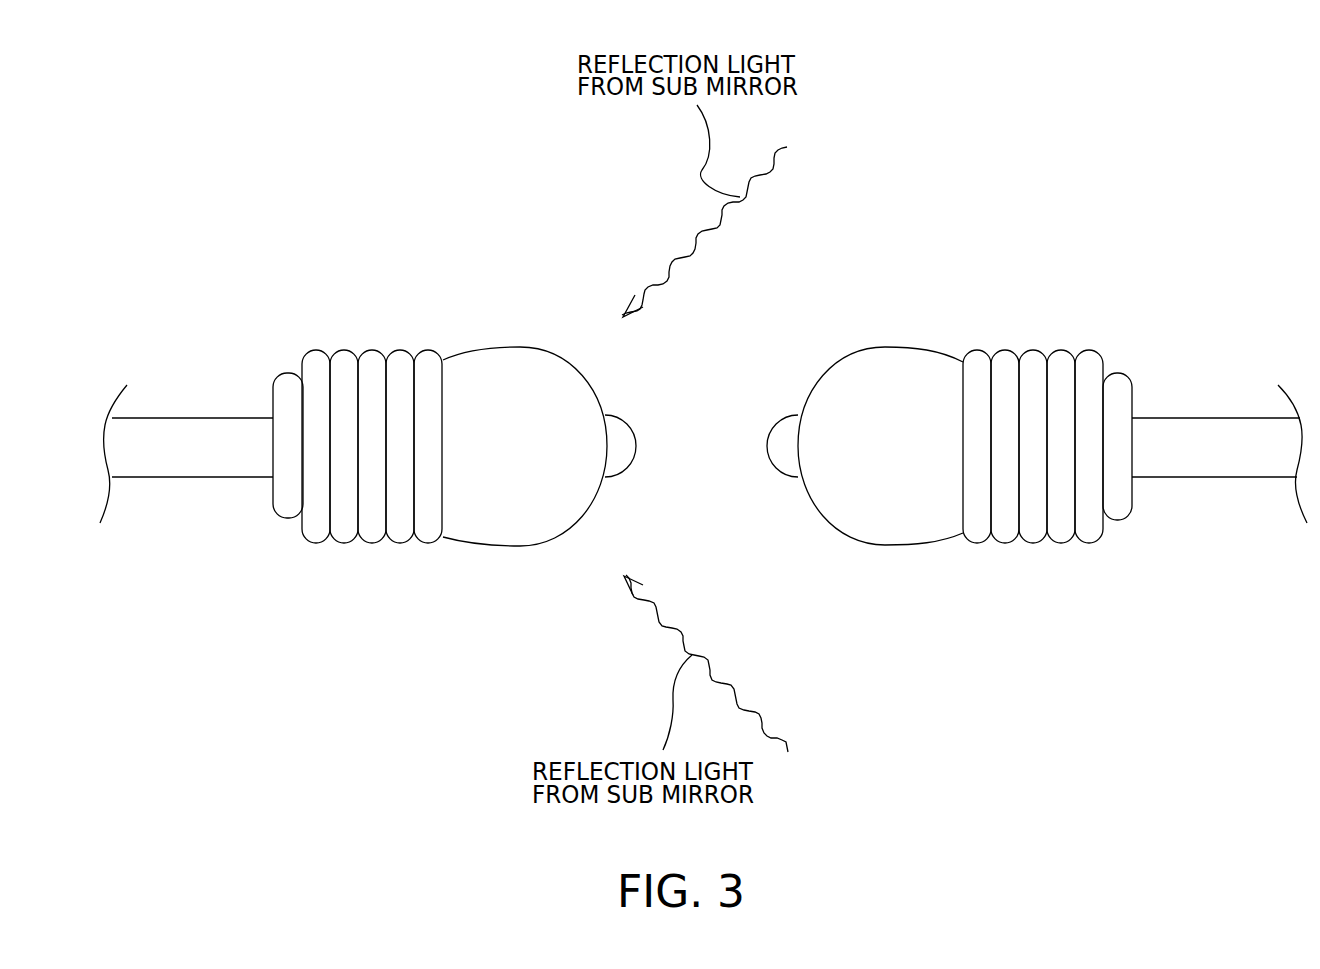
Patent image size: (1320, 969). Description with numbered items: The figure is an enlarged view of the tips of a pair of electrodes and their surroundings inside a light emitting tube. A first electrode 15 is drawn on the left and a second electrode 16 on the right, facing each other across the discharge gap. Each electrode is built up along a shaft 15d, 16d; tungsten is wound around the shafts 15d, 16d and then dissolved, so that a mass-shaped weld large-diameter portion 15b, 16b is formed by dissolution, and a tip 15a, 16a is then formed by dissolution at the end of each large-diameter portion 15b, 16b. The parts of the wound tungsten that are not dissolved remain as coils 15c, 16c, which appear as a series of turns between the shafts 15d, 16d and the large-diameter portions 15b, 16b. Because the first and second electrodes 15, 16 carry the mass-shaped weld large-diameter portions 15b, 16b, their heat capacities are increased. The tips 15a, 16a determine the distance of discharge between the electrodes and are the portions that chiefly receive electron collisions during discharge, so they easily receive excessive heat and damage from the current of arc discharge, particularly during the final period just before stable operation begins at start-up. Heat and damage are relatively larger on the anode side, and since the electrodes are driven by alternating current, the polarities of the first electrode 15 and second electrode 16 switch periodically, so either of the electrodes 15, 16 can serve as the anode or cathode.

The first electrode 15 is at (416, 436).
The tip 15a is at (625, 418).
The weld large-diameter portion 15b is at (515, 346).
The coil 15c is at (398, 543).
The shaft 15d is at (228, 478).
The second electrode 16 is at (1010, 440).
The tip 16a is at (782, 474).
The weld large-diameter portion 16b is at (847, 530).
The coil 16c is at (1002, 543).
The shaft 16d is at (1198, 478).